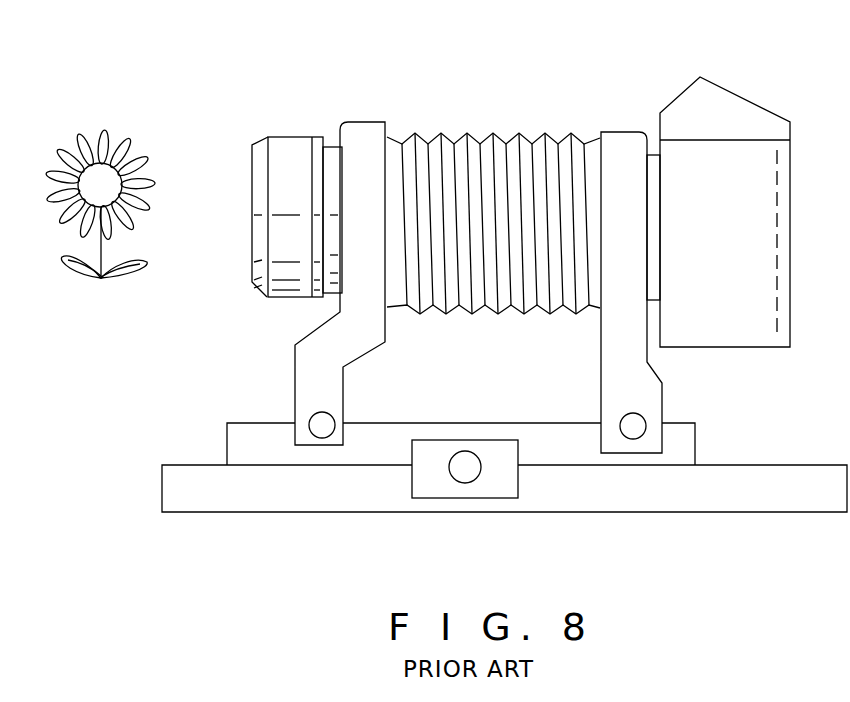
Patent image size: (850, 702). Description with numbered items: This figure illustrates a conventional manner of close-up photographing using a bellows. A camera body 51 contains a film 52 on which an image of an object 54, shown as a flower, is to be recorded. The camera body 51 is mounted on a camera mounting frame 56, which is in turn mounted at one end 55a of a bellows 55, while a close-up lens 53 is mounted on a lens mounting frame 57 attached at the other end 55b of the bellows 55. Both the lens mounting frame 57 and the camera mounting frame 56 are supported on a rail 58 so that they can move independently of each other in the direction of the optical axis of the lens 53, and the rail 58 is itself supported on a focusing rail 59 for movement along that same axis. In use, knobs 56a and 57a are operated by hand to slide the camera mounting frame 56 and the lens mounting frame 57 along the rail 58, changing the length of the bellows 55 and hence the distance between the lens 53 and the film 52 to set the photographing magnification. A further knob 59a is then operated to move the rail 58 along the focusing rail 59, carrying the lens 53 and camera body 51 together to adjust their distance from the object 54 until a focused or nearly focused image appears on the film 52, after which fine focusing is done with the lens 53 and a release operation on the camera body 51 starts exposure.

The camera body 51 is at (738, 105).
The film 52 is at (777, 280).
The close-up lens 53 is at (287, 147).
The object 54 is at (120, 142).
The bellows 55 is at (496, 147).
The end of bellows 55a is at (590, 152).
The other end of bellows 55b is at (395, 147).
The camera mounting frame 56 is at (627, 147).
The knob 56a is at (620, 420).
The lens mounting frame 57 is at (360, 137).
The knob 57a is at (332, 418).
The rail 58 is at (685, 443).
The focusing rail 59 is at (548, 500).
The knob 59a is at (462, 477).